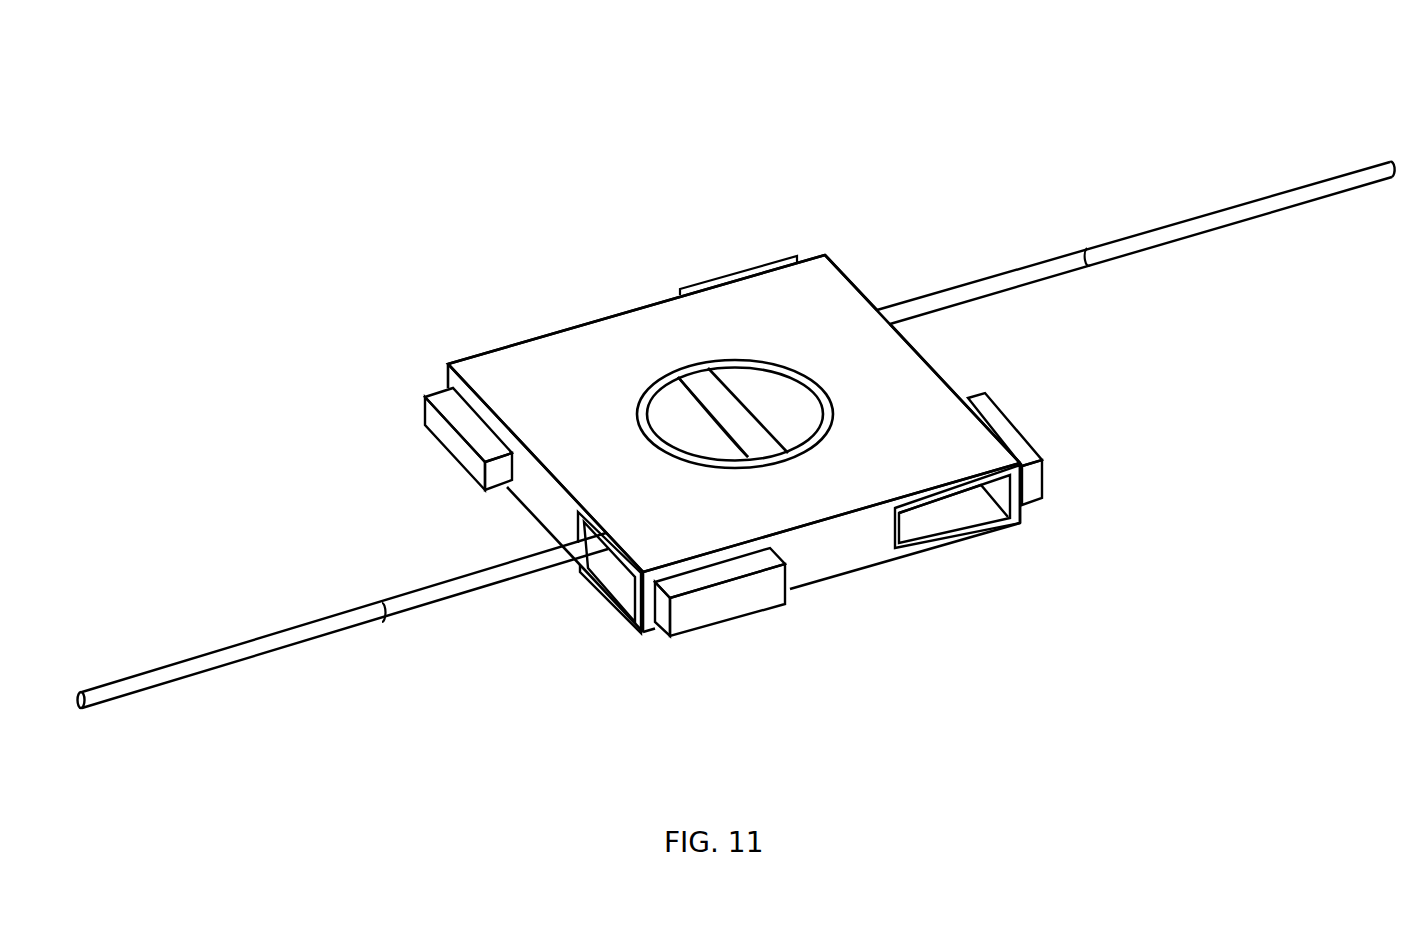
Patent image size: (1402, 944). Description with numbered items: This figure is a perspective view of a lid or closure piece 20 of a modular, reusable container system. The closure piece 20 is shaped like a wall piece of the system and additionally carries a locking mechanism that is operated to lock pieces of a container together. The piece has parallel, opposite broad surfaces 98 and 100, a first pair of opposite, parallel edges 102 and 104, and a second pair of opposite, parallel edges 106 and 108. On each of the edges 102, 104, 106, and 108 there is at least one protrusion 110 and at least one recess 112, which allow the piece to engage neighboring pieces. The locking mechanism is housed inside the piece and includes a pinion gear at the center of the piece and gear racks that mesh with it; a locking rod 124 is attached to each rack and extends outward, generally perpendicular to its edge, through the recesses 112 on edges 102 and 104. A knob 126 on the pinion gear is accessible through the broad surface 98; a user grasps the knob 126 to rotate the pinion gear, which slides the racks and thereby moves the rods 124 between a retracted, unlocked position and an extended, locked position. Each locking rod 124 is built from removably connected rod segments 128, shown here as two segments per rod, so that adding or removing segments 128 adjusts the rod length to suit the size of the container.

The closure piece 20 is at (464, 180).
The broad surface 98 is at (815, 287).
The broad surface 100 is at (927, 553).
The edge 102 is at (537, 490).
The edge 104 is at (947, 381).
The edge 106 is at (565, 330).
The edge 108 is at (810, 565).
The protrusion 110 is at (437, 388).
The recess 112 is at (945, 541).
The locking rod 124 is at (1134, 252).
The knob 126 is at (698, 378).
The rod segment 128 is at (1003, 282).